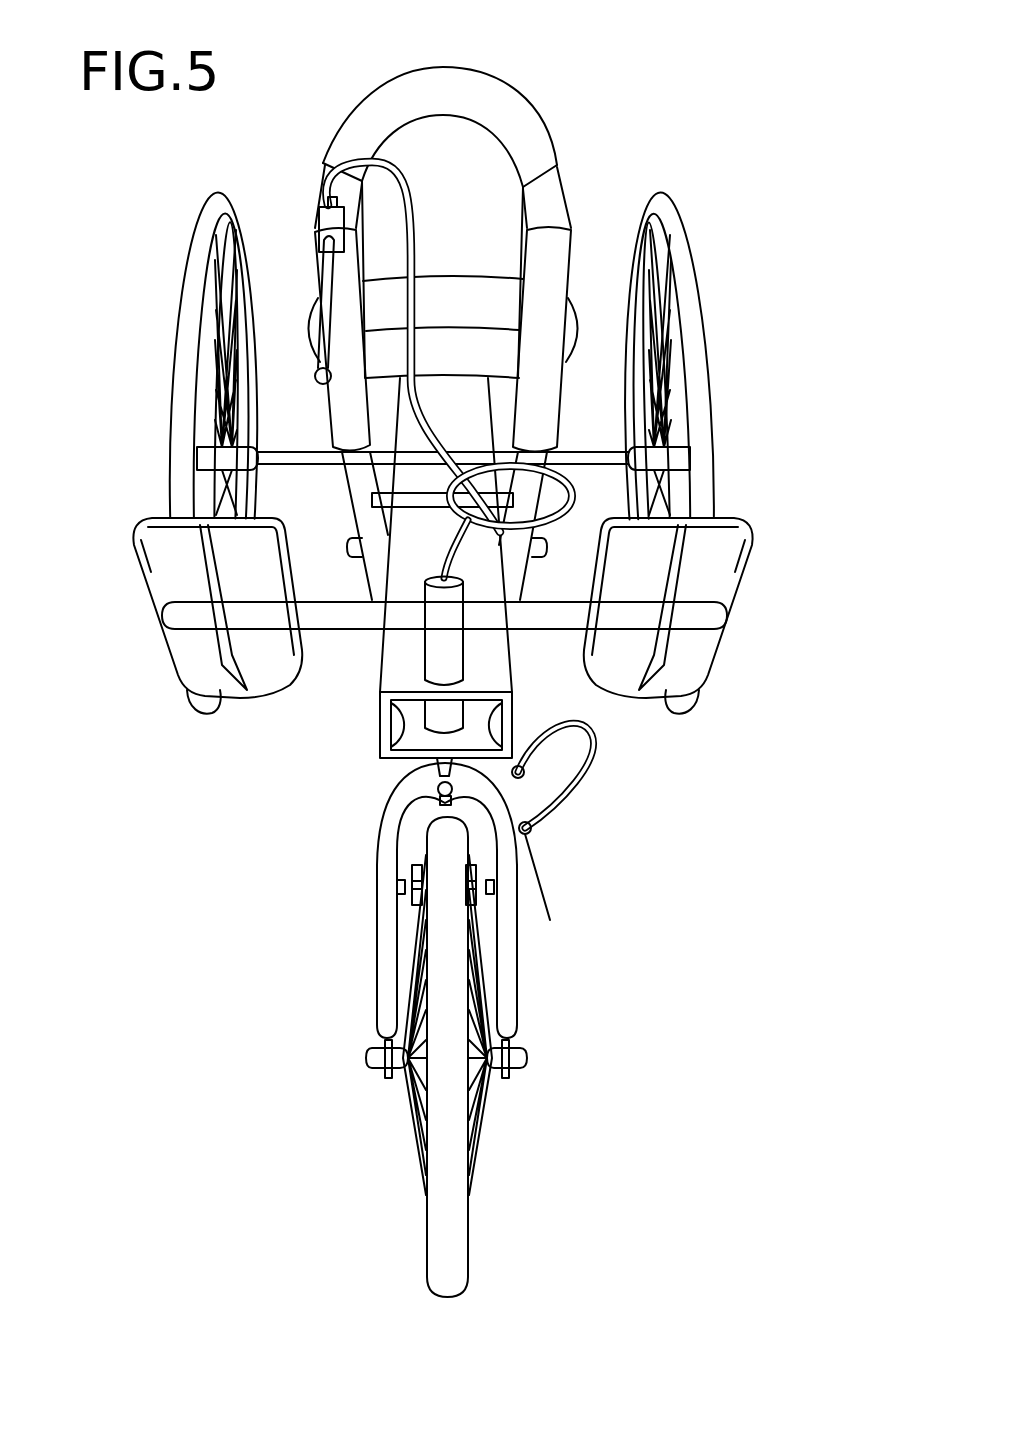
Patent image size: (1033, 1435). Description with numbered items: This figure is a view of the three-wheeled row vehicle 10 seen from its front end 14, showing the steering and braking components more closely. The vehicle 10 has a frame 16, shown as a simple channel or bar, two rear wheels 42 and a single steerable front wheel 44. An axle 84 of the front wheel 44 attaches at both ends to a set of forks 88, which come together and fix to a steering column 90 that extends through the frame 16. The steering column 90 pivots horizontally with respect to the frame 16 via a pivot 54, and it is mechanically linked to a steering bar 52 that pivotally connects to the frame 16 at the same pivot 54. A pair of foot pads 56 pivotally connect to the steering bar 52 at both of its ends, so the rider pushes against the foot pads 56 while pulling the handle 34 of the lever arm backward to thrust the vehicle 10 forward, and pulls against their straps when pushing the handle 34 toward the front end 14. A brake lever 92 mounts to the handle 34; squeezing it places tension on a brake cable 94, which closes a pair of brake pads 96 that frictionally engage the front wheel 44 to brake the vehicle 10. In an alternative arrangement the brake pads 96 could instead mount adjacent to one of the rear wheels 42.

The row vehicle 10 is at (442, 660).
The front end 14 is at (463, 1039).
The frame 16 is at (380, 735).
The handle 34 is at (504, 84).
The rear wheels 42 is at (195, 215).
The front wheel 44 is at (470, 1243).
The steering bar 52 is at (348, 629).
The pivot 54 is at (457, 662).
The foot pads 56 is at (140, 570).
The axle 84 is at (373, 1078).
The forks 88 is at (375, 947).
The steering column 90 is at (453, 713).
The brake lever 92 is at (326, 227).
The brake cable 94 is at (424, 231).
The brake pads 96 is at (410, 880).